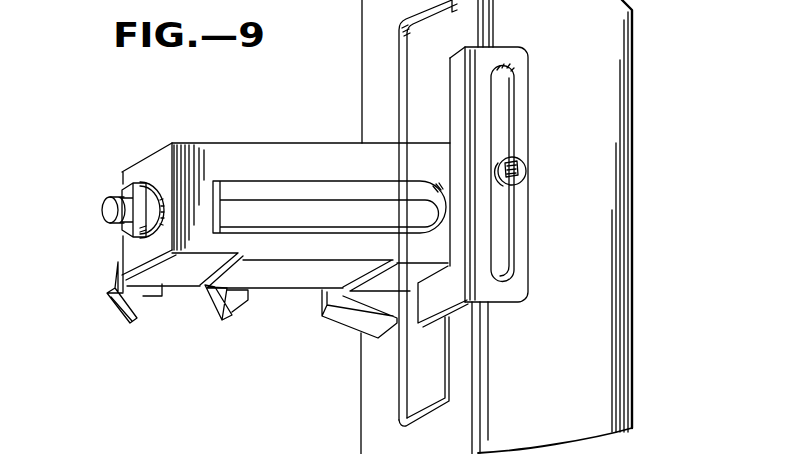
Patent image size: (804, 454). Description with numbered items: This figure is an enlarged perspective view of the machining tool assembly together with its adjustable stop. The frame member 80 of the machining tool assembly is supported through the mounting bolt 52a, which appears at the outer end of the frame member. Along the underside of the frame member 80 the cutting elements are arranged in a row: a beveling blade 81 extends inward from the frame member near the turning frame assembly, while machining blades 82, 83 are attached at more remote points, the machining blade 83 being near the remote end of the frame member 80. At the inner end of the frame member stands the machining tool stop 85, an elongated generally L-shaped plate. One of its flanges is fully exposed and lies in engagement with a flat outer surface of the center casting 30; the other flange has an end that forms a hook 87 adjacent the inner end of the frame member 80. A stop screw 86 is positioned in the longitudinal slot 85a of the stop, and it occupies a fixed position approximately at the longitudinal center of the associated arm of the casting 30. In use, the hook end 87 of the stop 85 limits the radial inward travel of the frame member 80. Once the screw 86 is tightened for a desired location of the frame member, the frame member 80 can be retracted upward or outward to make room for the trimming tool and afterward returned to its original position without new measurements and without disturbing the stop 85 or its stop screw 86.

The center casting 30 is at (612, 34).
The frame member 80 is at (311, 158).
The beveling blade 81 is at (345, 322).
The machining blade 82 is at (218, 314).
The machining blade 83 is at (114, 303).
The machining tool stop 85 is at (560, 187).
The longitudinal slot 85a is at (510, 240).
The stop screw 86 is at (518, 170).
The hook 87 is at (438, 300).
The mounting bolt 52a is at (108, 214).